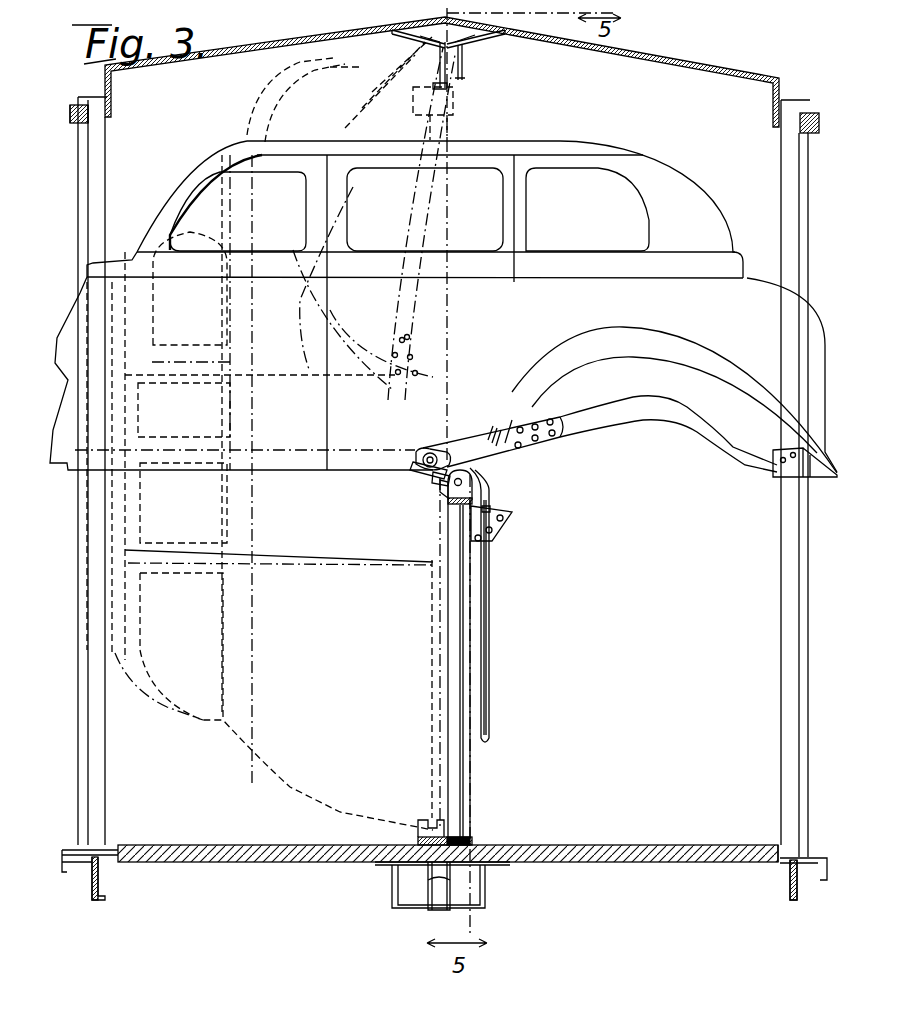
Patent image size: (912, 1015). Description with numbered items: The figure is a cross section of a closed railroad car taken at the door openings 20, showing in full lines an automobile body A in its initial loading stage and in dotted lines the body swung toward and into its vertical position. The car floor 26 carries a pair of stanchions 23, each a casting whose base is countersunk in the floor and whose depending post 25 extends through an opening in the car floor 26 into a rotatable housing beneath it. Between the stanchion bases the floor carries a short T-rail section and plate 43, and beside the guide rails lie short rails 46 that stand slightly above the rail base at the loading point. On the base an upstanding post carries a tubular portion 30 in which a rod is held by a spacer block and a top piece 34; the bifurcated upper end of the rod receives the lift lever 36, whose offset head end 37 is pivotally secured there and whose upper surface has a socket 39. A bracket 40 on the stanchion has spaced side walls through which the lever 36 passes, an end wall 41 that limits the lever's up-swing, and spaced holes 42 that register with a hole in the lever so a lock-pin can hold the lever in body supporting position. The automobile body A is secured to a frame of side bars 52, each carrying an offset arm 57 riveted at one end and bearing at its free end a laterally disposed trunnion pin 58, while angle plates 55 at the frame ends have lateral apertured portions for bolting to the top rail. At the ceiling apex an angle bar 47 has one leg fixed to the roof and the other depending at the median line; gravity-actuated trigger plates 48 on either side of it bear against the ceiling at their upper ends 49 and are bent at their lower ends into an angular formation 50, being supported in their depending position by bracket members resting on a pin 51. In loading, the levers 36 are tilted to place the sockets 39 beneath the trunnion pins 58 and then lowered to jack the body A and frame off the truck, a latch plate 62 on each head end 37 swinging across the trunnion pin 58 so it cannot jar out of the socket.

The door opening 20 is at (93, 210).
The stanchion 23 is at (436, 605).
The depending post 25 is at (441, 906).
The car floor 26 is at (565, 845).
The tubular portion 30 is at (456, 688).
The top piece 34 is at (455, 505).
The lift lever 36 is at (490, 608).
The head end 37 is at (437, 477).
The socket 39 is at (432, 500).
The bracket 40 is at (509, 539).
The end wall 41 is at (505, 513).
The spaced holes 42 is at (486, 522).
The T-rail section and plate 43 is at (433, 821).
The short rail 46 is at (472, 838).
The angle bar 47 is at (455, 65).
The trigger plate 48 is at (427, 45).
The upper end bearing point 49 is at (397, 33).
The angular formation 50 is at (453, 63).
The pin 51 is at (440, 32).
The side bar 52 is at (426, 214).
The angle plate 55 is at (825, 478).
The offset arm 57 is at (431, 378).
The trunnion pin 58 is at (420, 477).
The latch plate 62 is at (417, 452).
The automobile body A is at (704, 188).